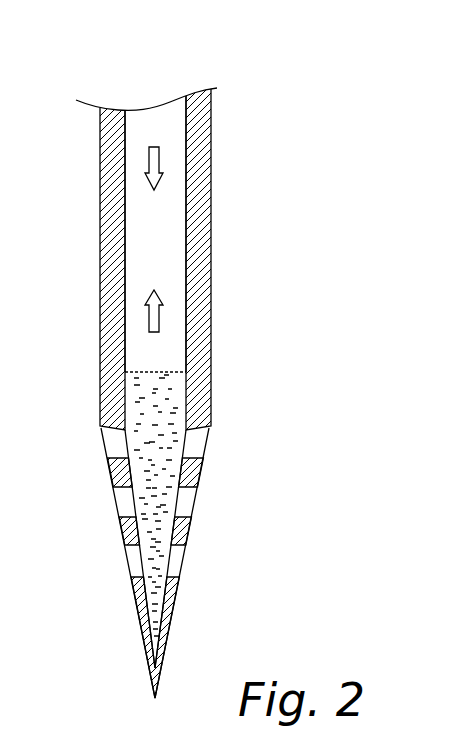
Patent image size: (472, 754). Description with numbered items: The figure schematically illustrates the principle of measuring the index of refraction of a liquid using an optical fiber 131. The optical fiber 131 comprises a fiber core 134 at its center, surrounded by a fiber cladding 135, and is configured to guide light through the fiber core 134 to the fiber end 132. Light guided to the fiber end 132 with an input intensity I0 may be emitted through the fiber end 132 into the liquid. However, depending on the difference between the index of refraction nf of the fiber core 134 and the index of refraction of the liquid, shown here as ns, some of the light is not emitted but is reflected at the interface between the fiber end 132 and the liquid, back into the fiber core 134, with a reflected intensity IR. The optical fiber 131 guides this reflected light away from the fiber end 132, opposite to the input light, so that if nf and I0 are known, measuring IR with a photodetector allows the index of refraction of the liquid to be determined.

The fiber core 134 is at (157, 108).
The optical fiber 131 is at (212, 102).
The fiber cladding 135 is at (172, 126).
The fiber end 132 is at (157, 373).
The input light intensity I0 is at (157, 162).
The reflected light intensity IR is at (156, 315).
The index of refraction of the fiber core nf is at (153, 232).
The refractive index of sample ns is at (155, 394).